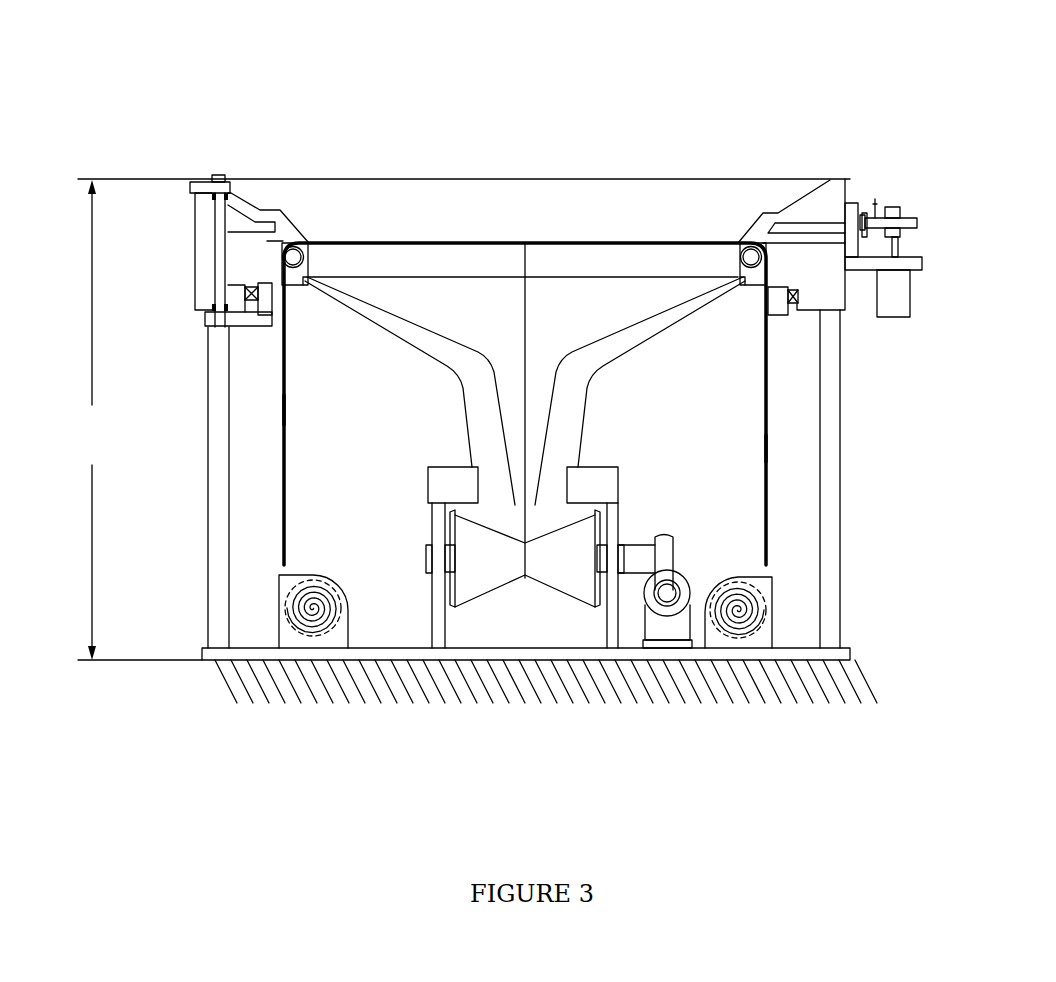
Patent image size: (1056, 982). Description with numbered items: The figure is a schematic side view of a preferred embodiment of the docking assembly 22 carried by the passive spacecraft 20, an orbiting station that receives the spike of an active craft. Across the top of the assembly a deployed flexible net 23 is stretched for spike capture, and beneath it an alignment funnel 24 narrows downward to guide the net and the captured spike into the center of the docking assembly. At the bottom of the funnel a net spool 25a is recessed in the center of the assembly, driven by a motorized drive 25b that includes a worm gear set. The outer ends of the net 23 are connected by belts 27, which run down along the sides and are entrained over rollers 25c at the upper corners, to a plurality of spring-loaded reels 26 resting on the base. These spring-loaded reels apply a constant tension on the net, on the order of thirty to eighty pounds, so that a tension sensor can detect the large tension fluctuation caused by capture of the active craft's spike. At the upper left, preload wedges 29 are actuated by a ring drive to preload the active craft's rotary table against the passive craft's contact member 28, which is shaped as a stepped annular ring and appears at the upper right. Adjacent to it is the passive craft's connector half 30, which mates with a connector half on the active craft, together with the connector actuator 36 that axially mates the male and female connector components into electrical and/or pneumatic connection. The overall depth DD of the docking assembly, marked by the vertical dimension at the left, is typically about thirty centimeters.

The passive spacecraft 20 is at (539, 688).
The docking assembly 22 is at (773, 151).
The flexible net 23 is at (505, 243).
The alignment funnel 24 is at (595, 367).
The net spool 25a is at (492, 554).
The motorized drive 25b is at (668, 608).
The rollers 25c is at (293, 252).
The spring-loaded reels 26 is at (316, 612).
The belts 27 is at (285, 410).
The contact member 28 is at (818, 203).
The preload wedges 29 is at (207, 193).
The connector half 30 is at (904, 258).
The connector actuator 36 is at (901, 297).
The depth DD is at (464, 419).